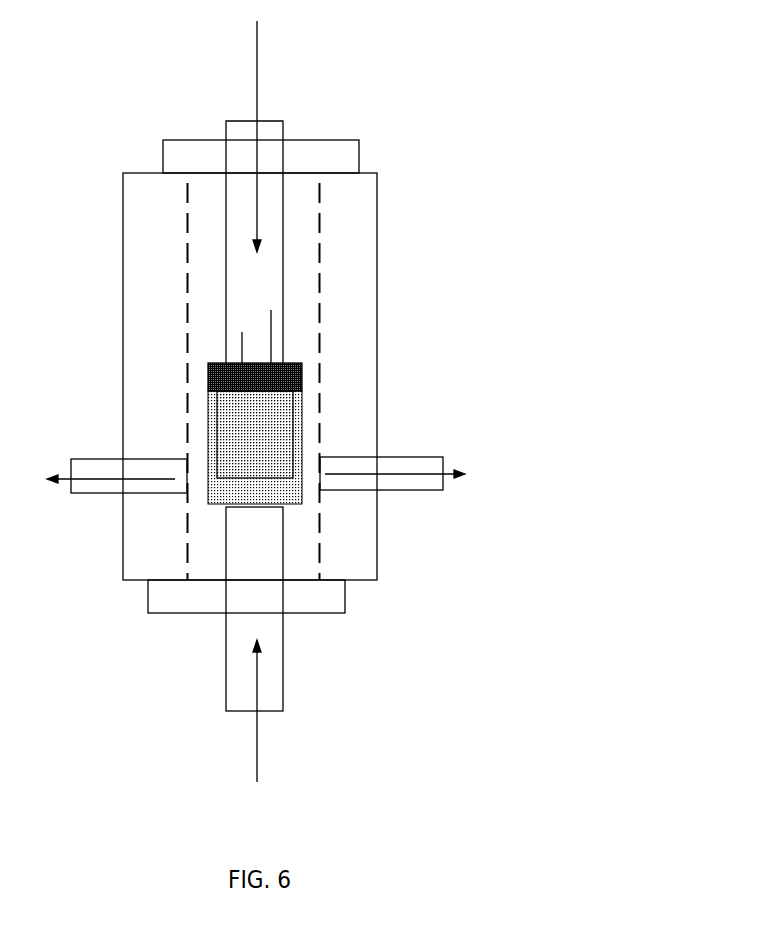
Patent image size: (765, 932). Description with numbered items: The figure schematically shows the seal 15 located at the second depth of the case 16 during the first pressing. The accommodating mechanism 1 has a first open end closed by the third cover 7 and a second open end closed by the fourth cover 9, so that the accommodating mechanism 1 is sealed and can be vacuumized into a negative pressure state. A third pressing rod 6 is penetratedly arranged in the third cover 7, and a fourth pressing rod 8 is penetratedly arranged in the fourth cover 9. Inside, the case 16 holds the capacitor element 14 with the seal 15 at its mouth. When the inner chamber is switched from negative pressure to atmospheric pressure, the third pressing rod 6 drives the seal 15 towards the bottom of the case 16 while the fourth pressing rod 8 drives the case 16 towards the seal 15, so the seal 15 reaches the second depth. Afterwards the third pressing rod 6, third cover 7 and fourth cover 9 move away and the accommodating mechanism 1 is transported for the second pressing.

The accommodating mechanism 1 is at (140, 223).
The third pressing rod 6 is at (273, 269).
The third cover 7 is at (338, 150).
The fourth pressing rod 8 is at (272, 690).
The fourth cover 9 is at (335, 600).
The capacitor element 14 is at (283, 420).
The seal 15 is at (302, 368).
The cases 16 is at (212, 443).